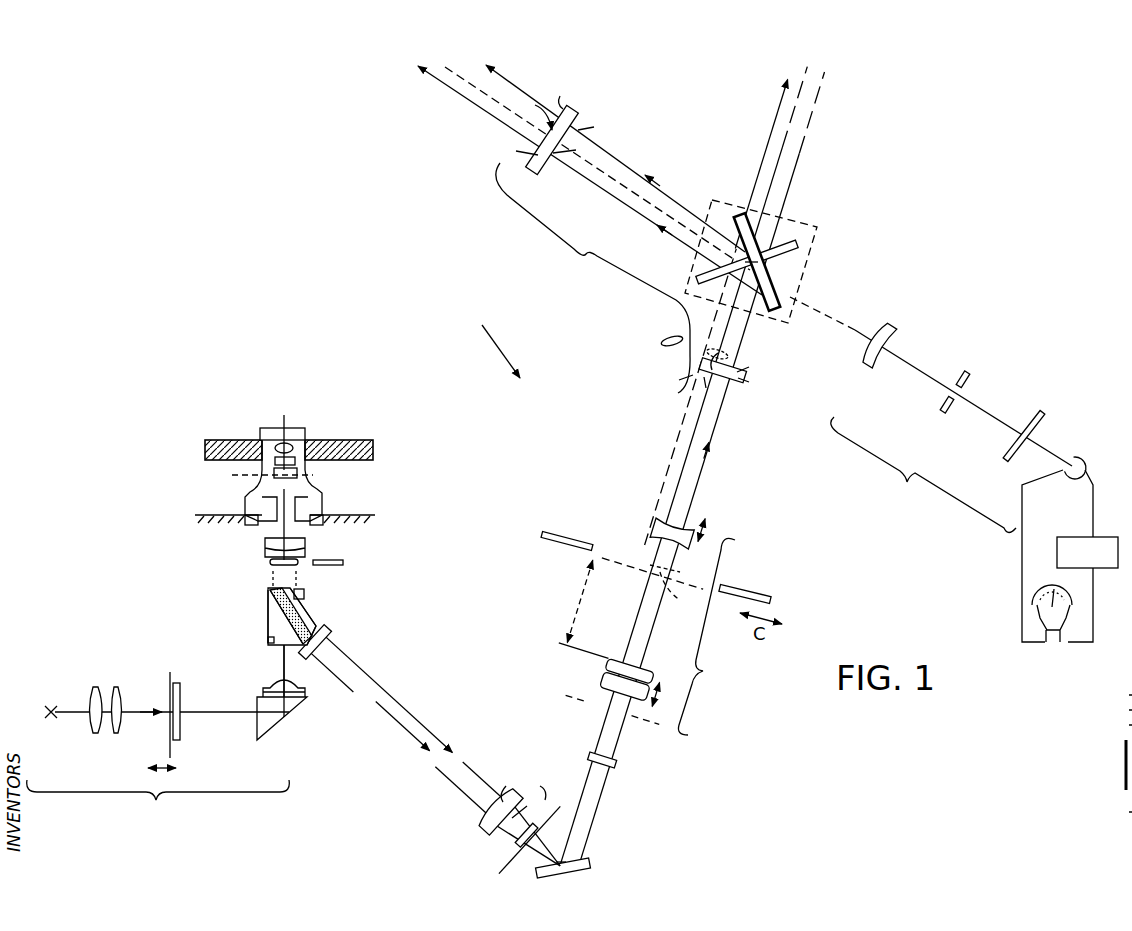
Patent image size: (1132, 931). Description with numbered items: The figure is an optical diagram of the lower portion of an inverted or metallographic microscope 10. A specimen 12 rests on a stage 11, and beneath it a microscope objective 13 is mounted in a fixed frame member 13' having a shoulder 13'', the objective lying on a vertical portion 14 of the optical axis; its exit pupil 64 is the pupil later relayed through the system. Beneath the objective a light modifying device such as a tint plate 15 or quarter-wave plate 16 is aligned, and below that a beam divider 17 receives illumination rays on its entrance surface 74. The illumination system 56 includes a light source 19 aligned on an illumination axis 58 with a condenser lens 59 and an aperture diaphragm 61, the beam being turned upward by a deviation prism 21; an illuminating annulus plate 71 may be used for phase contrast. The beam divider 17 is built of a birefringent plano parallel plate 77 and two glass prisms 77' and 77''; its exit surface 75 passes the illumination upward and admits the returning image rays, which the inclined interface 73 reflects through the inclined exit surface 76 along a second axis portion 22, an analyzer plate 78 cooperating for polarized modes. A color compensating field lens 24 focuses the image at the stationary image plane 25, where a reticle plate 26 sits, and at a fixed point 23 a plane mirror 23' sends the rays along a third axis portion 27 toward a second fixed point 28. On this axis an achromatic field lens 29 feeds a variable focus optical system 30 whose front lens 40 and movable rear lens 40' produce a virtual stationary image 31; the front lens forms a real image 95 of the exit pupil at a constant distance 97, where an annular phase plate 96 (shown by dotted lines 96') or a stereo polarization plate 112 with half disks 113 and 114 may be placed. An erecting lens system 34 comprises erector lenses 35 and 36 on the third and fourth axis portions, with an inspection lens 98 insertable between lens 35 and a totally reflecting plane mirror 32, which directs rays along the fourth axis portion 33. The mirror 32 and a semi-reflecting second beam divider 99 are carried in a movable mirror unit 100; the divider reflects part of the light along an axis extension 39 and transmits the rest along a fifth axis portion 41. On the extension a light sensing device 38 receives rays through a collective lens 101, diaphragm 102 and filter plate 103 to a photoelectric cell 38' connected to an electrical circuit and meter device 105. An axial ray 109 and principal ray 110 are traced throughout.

The microscope 10 is at (493, 342).
The stage 11 is at (205, 447).
The specimen 12 is at (305, 430).
The microscope objective 13 is at (302, 481).
The fixed frame member 13' is at (348, 509).
The shoulder 13'' is at (211, 509).
The vertical portion of the optical axis 14 is at (272, 499).
The tint plate 15 is at (268, 562).
The quarter-wave plate 16 is at (338, 561).
The beam divider 17 is at (266, 599).
The light source 19 is at (50, 707).
The deviation prism 21 is at (271, 724).
The second axis portion 22 is at (380, 695).
The fixed point 23 is at (535, 870).
The plane mirror 23' is at (588, 878).
The color compensating field lens 24 is at (490, 815).
The stationary image plane 25 is at (512, 855).
The reticle plate 26 is at (519, 838).
The third axis portion 27 is at (700, 440).
The second fixed point 28 is at (748, 263).
The achromatic field lens 29 is at (604, 763).
The variable focus optical system 30 is at (709, 636).
The virtual stationary image 31 is at (650, 723).
The plane mirror 32 is at (768, 289).
The fourth axis portion 33 is at (628, 192).
The erecting lens system 34 is at (593, 278).
The erector lens 35 is at (740, 380).
The erector lens 36 is at (575, 117).
The light sensing device 38 is at (923, 475).
The photoelectric cell 38' is at (1091, 449).
The axis extension 39 is at (840, 321).
The front lens 40 is at (603, 682).
The rear lens 40' is at (690, 544).
The fifth axis portion 41 is at (797, 125).
The illumination system 56 is at (158, 801).
The illumination axis 58 is at (221, 714).
The condenser lens 59 is at (126, 680).
The aperture diaphragm 61 is at (171, 681).
The exit pupil 64 is at (232, 472).
The illuminating annulus plate 71 is at (182, 739).
The interface 73 is at (270, 614).
The entrance surface 74 is at (268, 641).
The exit surface 75 is at (302, 598).
The inclined exit surface 76 is at (316, 628).
The plano parallel plate 77 is at (295, 681).
The prism of optical glass 77' is at (269, 638).
The prism of optical glass 77'' is at (325, 607).
The analyzer plate 78 is at (333, 640).
The real image of the exit pupil 95 is at (622, 561).
The annular phase plate 96 is at (762, 582).
The dotted lines 96' is at (676, 592).
The constant distance 97 is at (582, 601).
The inspection lens 98 is at (670, 335).
The second beam divider 99 is at (797, 245).
The movable mirror unit 100 is at (805, 222).
The collective lens 101 is at (897, 333).
The diaphragm 102 is at (948, 392).
The filter plate 103 is at (1030, 423).
The electrical circuit and meter device 105 is at (1052, 557).
The axial ray 109 is at (696, 504).
The principal ray 110 is at (672, 477).
The stereo polarization plate 112 is at (556, 533).
The half disk 113 is at (542, 542).
The half disk 114 is at (578, 548).